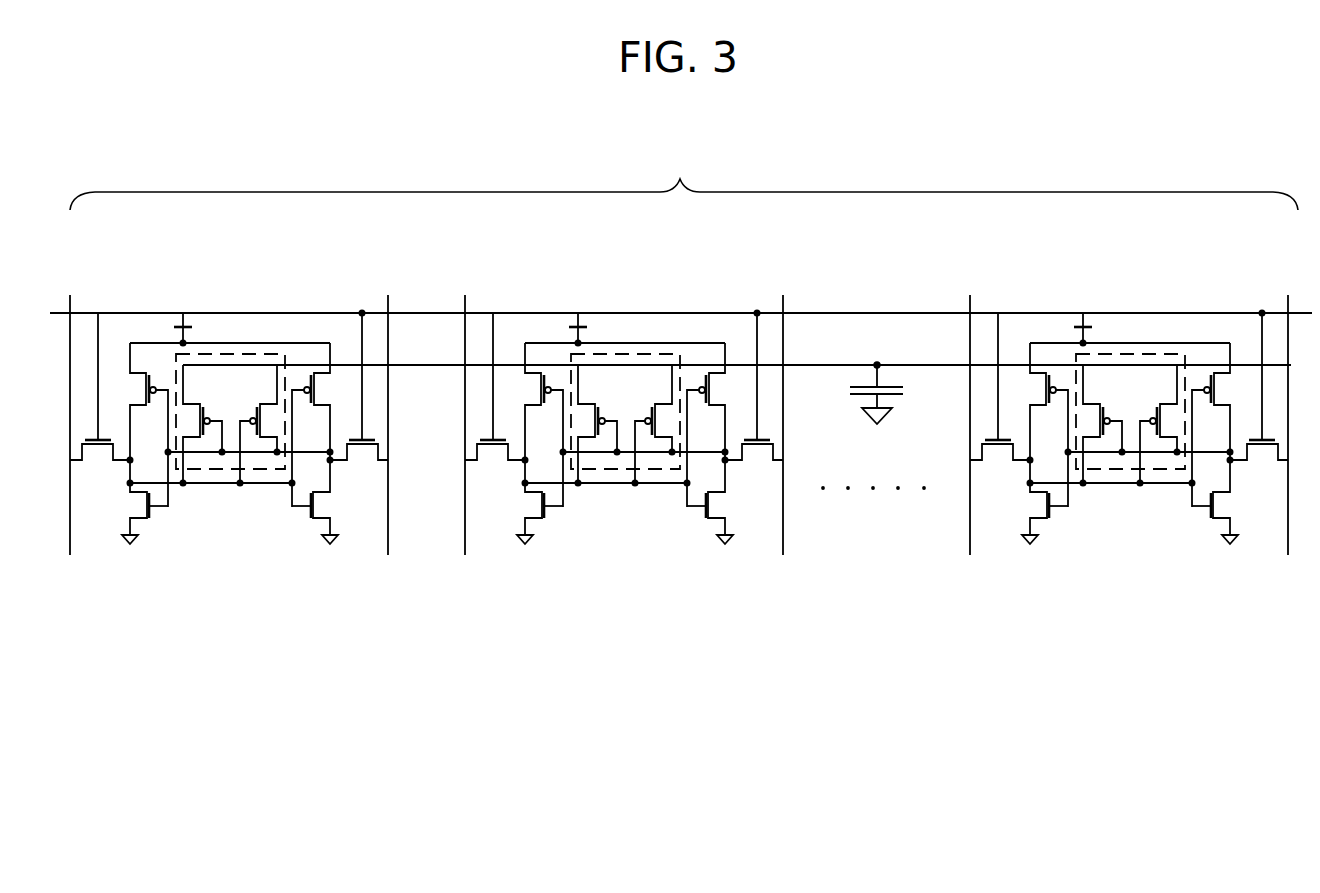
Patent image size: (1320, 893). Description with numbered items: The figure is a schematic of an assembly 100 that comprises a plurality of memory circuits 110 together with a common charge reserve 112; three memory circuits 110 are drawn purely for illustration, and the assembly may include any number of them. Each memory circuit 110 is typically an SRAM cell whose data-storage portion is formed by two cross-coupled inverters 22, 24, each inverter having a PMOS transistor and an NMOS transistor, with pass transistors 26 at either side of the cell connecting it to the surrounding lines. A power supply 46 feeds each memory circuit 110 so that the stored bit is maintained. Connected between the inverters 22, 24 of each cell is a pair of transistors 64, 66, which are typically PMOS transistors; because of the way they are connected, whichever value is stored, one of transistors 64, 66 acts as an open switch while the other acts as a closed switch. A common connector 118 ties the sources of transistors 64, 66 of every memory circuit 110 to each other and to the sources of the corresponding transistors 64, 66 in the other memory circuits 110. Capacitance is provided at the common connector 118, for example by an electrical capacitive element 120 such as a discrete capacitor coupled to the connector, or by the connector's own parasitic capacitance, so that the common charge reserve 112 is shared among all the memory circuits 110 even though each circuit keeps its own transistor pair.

The assembly 100 is at (684, 175).
The memory circuit 110 is at (234, 392).
The pass transistor 26 is at (100, 358).
The power supply 46 is at (165, 303).
The transistor 64 is at (202, 373).
The transistor 66 is at (258, 373).
The inverter 22 is at (165, 452).
The inverter 24 is at (297, 452).
The common charge reserve 112 is at (883, 348).
The common connector 118 is at (828, 363).
The electrical capacitive element 120 is at (893, 382).